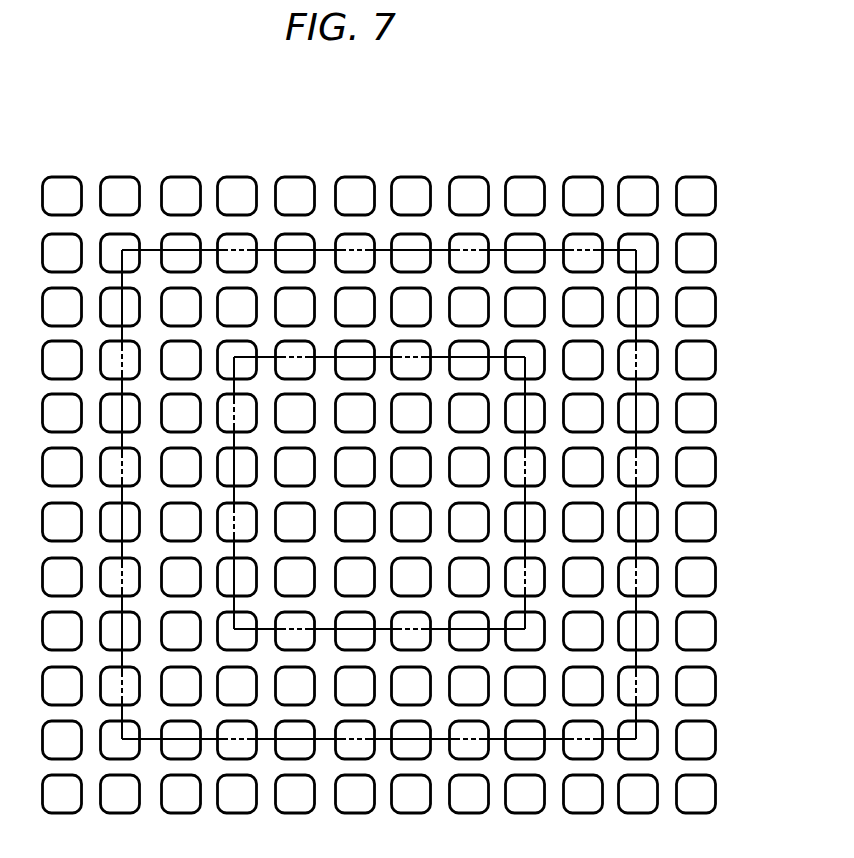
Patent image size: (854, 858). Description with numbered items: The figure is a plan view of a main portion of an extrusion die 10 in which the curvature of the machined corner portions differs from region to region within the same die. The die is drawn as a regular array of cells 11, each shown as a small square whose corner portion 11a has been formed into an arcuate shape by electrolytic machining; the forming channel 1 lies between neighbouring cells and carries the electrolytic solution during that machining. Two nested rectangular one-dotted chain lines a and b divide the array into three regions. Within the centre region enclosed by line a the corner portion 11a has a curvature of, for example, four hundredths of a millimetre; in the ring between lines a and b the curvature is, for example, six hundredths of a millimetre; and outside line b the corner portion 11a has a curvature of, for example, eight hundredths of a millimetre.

The extrusion die 10 is at (626, 133).
The cell 11 is at (530, 178).
The corner portion 11a is at (338, 177).
The forming channel 1 is at (385, 178).
The one-dotted chain line a is at (526, 410).
The one-dotted chain line b is at (637, 518).